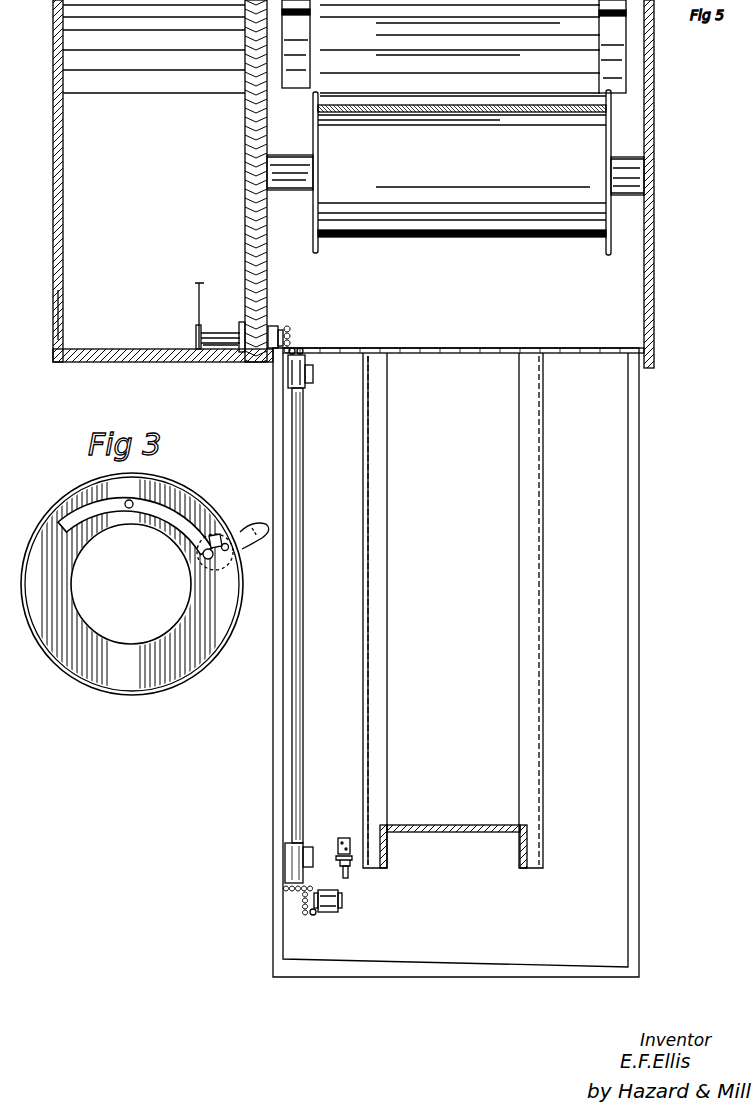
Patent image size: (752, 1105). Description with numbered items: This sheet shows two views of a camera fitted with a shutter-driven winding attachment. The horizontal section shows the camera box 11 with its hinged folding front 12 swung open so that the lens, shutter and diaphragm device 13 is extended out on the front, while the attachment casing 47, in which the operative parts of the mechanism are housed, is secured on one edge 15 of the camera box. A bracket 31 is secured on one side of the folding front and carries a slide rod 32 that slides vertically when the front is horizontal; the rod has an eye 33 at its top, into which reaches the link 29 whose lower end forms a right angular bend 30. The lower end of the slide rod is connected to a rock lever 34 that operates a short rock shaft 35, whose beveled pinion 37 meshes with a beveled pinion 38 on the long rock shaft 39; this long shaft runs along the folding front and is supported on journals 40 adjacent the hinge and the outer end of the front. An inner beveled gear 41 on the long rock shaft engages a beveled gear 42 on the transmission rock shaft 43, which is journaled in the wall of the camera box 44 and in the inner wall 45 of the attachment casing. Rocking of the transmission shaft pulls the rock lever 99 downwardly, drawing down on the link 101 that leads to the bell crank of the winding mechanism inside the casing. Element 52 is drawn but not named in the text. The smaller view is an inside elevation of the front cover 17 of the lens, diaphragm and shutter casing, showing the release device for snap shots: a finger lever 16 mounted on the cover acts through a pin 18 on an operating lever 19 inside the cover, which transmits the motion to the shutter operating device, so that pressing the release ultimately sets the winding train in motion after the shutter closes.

In FIG. 5, the camera box 11 is at (652, 66).
In FIG. 5, the folding front 12 is at (641, 648).
In FIG. 3, the lens, shutter and diaphragm device 13 is at (243, 600).
In FIG. 5, the edge of camera box 15 is at (252, 364).
In FIG. 3, the finger lever 16 is at (260, 531).
In FIG. 3, the front cover 17 is at (72, 657).
In FIG. 3, the pin 18 is at (215, 534).
In FIG. 3, the operating lever 19 is at (75, 508).
In FIG. 5, the link 29 is at (340, 857).
In FIG. 5, the right angular bend 30 is at (348, 876).
In FIG. 5, the bracket 31 is at (344, 838).
In FIG. 5, the slide rod 32 is at (376, 866).
In FIG. 5, the eye 33 is at (340, 863).
In FIG. 5, the rock lever 34 is at (343, 904).
In FIG. 5, the short rock shaft 35 is at (313, 916).
In FIG. 5, the beveled pinion 37 is at (302, 906).
In FIG. 5, the beveled pinion 38 is at (283, 887).
In FIG. 5, the long rock shaft 39 is at (292, 700).
In FIG. 5, the journals 40 is at (285, 860).
In FIG. 5, the inner beveled gear 41 is at (302, 348).
In FIG. 5, the beveled gear 42 is at (290, 332).
In FIG. 5, the transmission rock shaft 43 is at (228, 350).
In FIG. 5, the wall of the camera box 44 is at (274, 328).
In FIG. 5, the inner wall 45 is at (243, 322).
In FIG. 5, the attachment casing 47 is at (55, 298).
In FIG. 5, the sheets 52 is at (54, 172).
In FIG. 5, the rock lever 99 is at (198, 326).
In FIG. 5, the link 101 is at (197, 284).